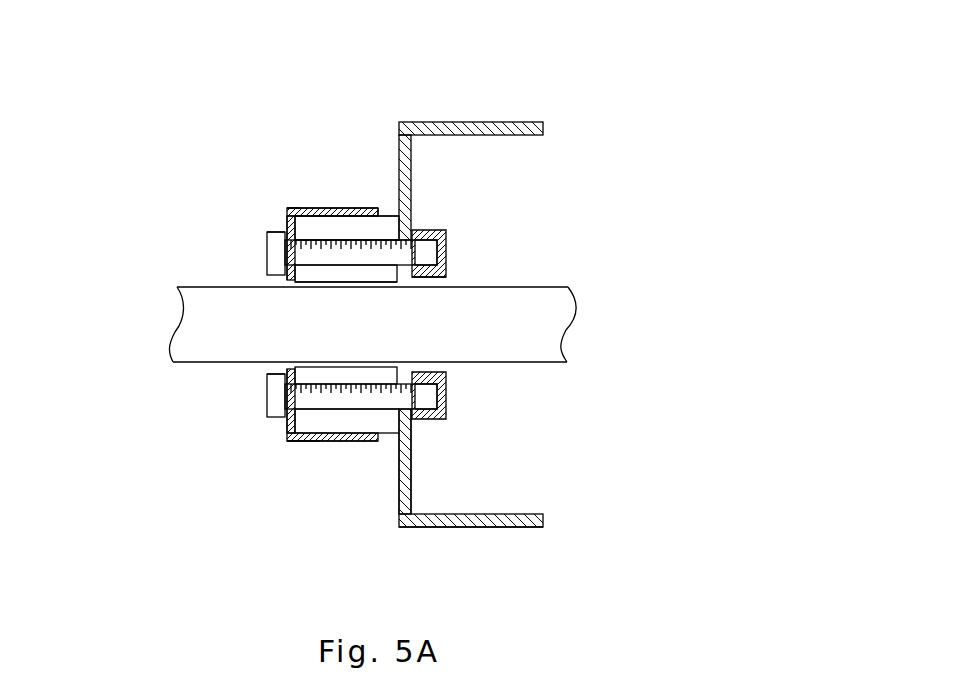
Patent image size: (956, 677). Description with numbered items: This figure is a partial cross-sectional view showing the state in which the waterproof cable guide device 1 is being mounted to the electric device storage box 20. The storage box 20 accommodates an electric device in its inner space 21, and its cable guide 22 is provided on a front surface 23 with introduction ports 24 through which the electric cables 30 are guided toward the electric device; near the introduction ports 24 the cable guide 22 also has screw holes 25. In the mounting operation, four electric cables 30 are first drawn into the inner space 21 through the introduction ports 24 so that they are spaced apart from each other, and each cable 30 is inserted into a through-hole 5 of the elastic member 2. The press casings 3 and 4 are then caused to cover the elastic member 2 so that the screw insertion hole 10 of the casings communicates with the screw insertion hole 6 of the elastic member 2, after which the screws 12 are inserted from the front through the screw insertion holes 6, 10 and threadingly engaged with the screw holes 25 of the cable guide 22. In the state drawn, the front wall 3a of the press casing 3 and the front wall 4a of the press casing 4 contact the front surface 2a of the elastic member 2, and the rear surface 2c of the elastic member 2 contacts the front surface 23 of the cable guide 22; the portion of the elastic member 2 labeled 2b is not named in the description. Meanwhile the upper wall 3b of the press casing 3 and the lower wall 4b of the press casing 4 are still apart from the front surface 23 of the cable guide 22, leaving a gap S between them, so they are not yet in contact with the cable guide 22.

The waterproof cable guide device 1 is at (213, 385).
The elastic member 2 is at (343, 230).
The front surface 2a is at (290, 217).
The sleeve cylindrical portion 2b is at (323, 222).
The rear surface 2c is at (401, 222).
The press casing 3 is at (288, 222).
The front wall 3a is at (276, 232).
The upper wall 3b is at (358, 208).
The press casing 4 is at (296, 445).
The front wall 4a is at (285, 430).
The lower wall 4b is at (338, 441).
The through-hole 5 is at (292, 283).
The screw insertion hole 6 is at (300, 206).
The screw insertion hole 10 is at (267, 260).
The screw 12 is at (283, 238).
The electric device storage box 20 is at (532, 120).
The inner space 21 is at (481, 497).
The cable guide 22 is at (428, 446).
The front surface 23 is at (398, 445).
The introduction port 24 is at (434, 283).
The screw hole 25 is at (452, 243).
The electric cable 30 is at (180, 330).
The gap S is at (389, 210).